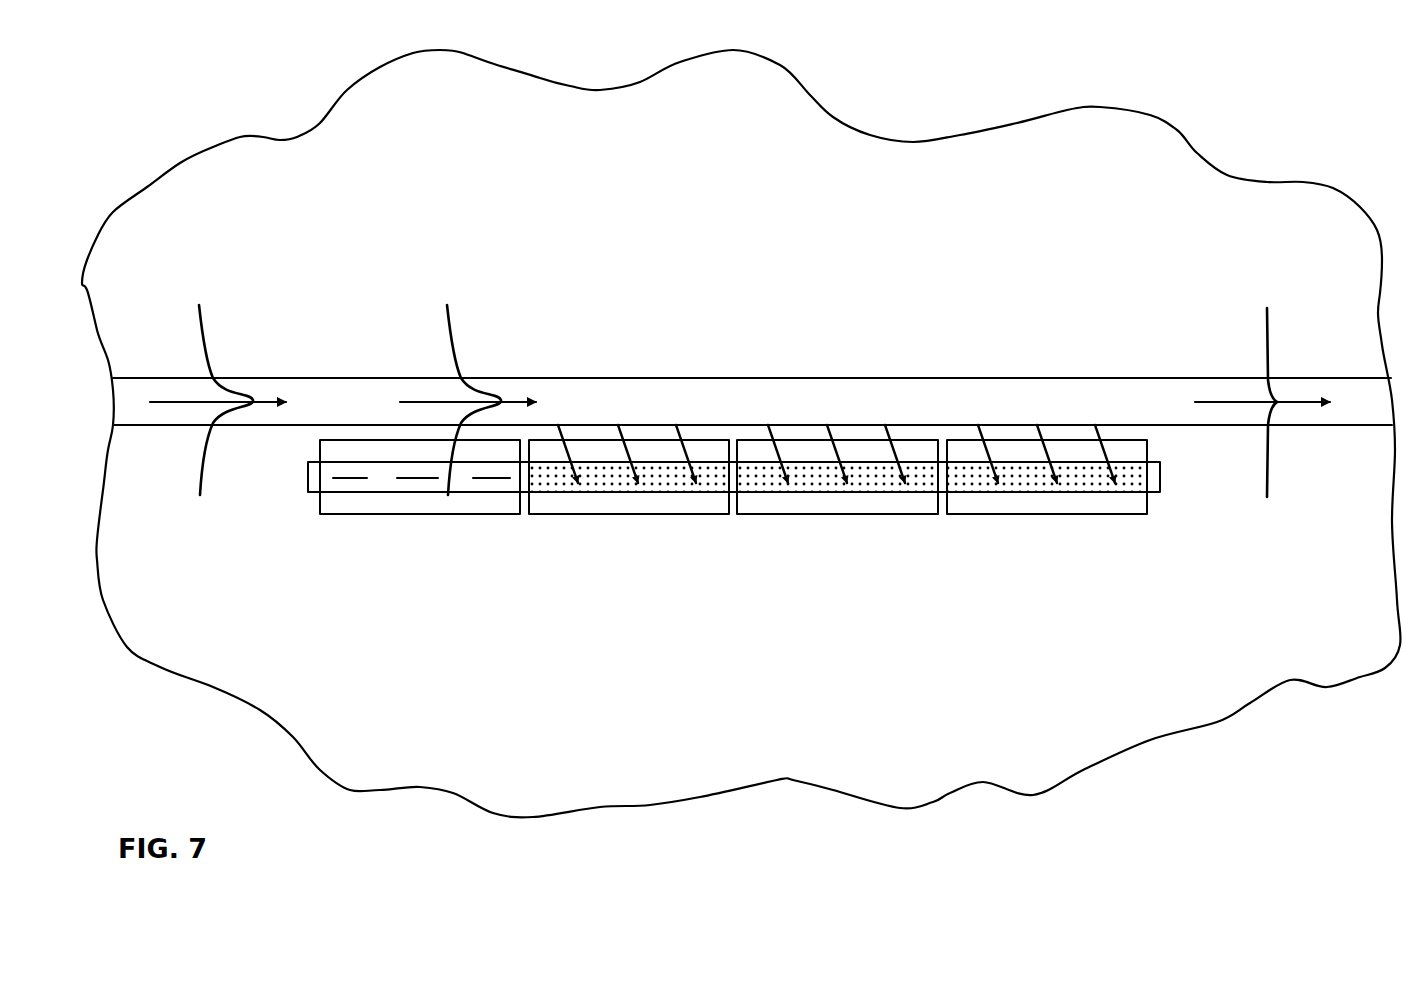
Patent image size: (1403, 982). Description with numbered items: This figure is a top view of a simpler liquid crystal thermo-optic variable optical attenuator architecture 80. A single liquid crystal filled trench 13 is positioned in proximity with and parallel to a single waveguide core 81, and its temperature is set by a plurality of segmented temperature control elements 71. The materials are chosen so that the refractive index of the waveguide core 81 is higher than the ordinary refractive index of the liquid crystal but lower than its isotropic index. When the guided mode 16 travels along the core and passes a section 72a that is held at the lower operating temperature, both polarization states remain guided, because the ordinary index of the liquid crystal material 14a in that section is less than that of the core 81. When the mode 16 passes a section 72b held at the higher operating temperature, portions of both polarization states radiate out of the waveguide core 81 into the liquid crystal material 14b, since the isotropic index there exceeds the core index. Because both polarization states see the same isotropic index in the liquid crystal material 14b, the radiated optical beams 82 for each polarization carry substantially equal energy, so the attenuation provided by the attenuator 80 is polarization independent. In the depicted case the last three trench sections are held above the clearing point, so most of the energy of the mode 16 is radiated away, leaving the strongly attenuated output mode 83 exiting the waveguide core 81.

The variable optical attenuator architecture 80 is at (622, 252).
The guided mode 16 is at (195, 329).
The waveguide core 81 is at (382, 398).
The attenuated output mode 83 is at (1260, 337).
The liquid crystal filled trench 13 is at (1162, 475).
The liquid crystal material at lower operating temperature 14a is at (377, 478).
The liquid crystal material at higher operating temperature 14b is at (1081, 476).
The trench section at lower operating temperature 72a is at (477, 495).
The trench section at higher operating temperature 72b is at (1050, 514).
The temperature control elements 71 is at (983, 514).
The radiated optical beams 82 is at (630, 452).